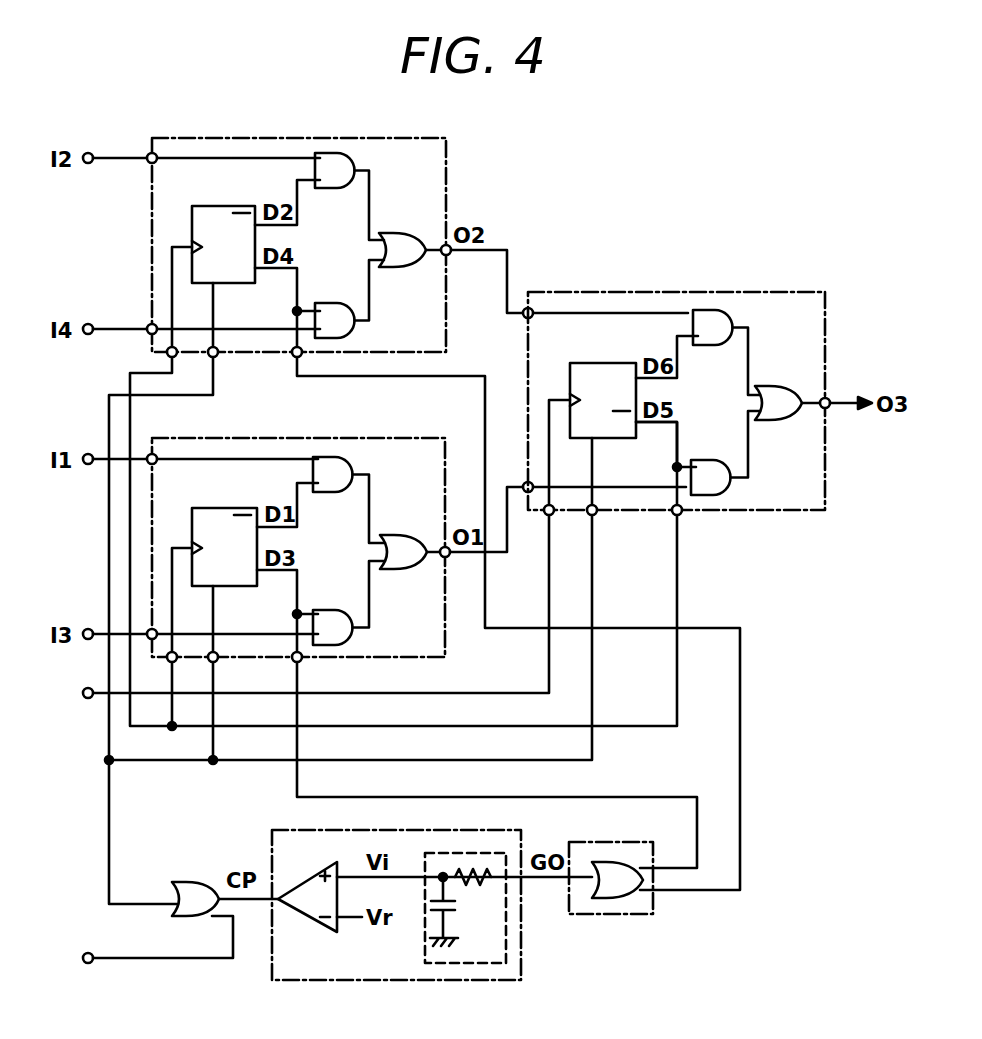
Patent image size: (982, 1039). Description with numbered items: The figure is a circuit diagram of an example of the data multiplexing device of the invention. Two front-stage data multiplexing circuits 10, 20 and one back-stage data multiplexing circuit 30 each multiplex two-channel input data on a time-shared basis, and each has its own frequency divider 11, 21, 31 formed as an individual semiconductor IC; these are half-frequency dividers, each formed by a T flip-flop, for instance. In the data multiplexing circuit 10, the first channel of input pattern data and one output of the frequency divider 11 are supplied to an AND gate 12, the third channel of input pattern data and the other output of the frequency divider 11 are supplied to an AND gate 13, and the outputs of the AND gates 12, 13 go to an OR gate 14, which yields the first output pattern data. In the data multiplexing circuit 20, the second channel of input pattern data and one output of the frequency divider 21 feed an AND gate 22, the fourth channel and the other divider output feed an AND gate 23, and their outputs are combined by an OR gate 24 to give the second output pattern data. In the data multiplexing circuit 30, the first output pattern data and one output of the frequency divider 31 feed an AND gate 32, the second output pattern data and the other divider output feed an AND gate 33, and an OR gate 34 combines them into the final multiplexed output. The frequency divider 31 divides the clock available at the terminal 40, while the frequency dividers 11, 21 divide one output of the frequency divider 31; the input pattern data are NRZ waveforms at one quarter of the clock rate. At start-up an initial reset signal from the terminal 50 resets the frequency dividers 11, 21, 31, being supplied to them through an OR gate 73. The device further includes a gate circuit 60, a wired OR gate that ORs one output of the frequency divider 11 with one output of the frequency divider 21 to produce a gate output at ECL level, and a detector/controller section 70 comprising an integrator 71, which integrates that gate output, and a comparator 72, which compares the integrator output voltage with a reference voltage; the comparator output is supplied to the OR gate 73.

The data multiplexing circuit 10 is at (246, 438).
The frequency divider 11 is at (202, 506).
The AND gate 12 is at (329, 494).
The AND gate 13 is at (329, 606).
The OR gate 14 is at (391, 570).
The data multiplexing circuit 20 is at (245, 138).
The frequency divider 21 is at (234, 206).
The AND gate 22 is at (331, 191).
The AND gate 23 is at (331, 301).
The OR gate 24 is at (388, 268).
The data multiplexing circuit 30 is at (617, 292).
The frequency divider 31 is at (583, 361).
The AND gate 32 is at (706, 457).
The AND gate 33 is at (706, 348).
The OR gate 34 is at (770, 421).
The terminal 40 is at (88, 699).
The terminal 50 is at (88, 964).
The gate circuit 60 is at (584, 919).
The detector/controller section 70 is at (284, 986).
The integrator 71 is at (446, 966).
The comparator 72 is at (300, 928).
The OR gate 73 is at (190, 881).